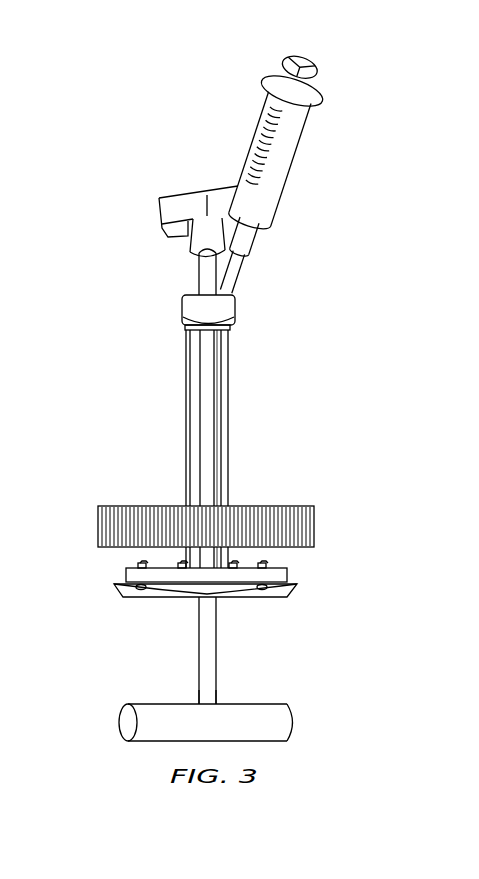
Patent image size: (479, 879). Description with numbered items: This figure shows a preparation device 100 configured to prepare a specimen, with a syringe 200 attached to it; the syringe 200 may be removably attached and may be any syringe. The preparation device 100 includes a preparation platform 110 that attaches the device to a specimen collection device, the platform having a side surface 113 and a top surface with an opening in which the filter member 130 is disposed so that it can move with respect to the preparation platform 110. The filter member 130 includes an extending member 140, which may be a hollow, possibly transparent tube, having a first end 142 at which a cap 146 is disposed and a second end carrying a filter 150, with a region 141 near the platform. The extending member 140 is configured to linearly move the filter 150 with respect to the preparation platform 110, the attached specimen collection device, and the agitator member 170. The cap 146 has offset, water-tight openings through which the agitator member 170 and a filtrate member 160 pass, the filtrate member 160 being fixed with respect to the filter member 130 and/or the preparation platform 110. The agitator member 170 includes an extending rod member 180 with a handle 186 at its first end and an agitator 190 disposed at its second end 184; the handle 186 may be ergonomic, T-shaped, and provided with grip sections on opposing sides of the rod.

The preparation device 100 is at (118, 102).
The syringe 200 is at (258, 91).
The filtrate member 160 is at (243, 273).
The handle 186 is at (151, 213).
The agitator member 170 is at (193, 272).
The cap 146 is at (175, 313).
The first end 142 is at (244, 333).
The extending member 140 is at (179, 437).
The extending rod member 180 is at (224, 398).
The filter member 130 is at (232, 455).
The preparation platform 110 is at (91, 507).
The side surface 113 is at (323, 526).
The mounting plate 141 is at (245, 556).
The filter 150 is at (307, 590).
The second end 184 is at (225, 698).
The agitator 190 is at (279, 719).